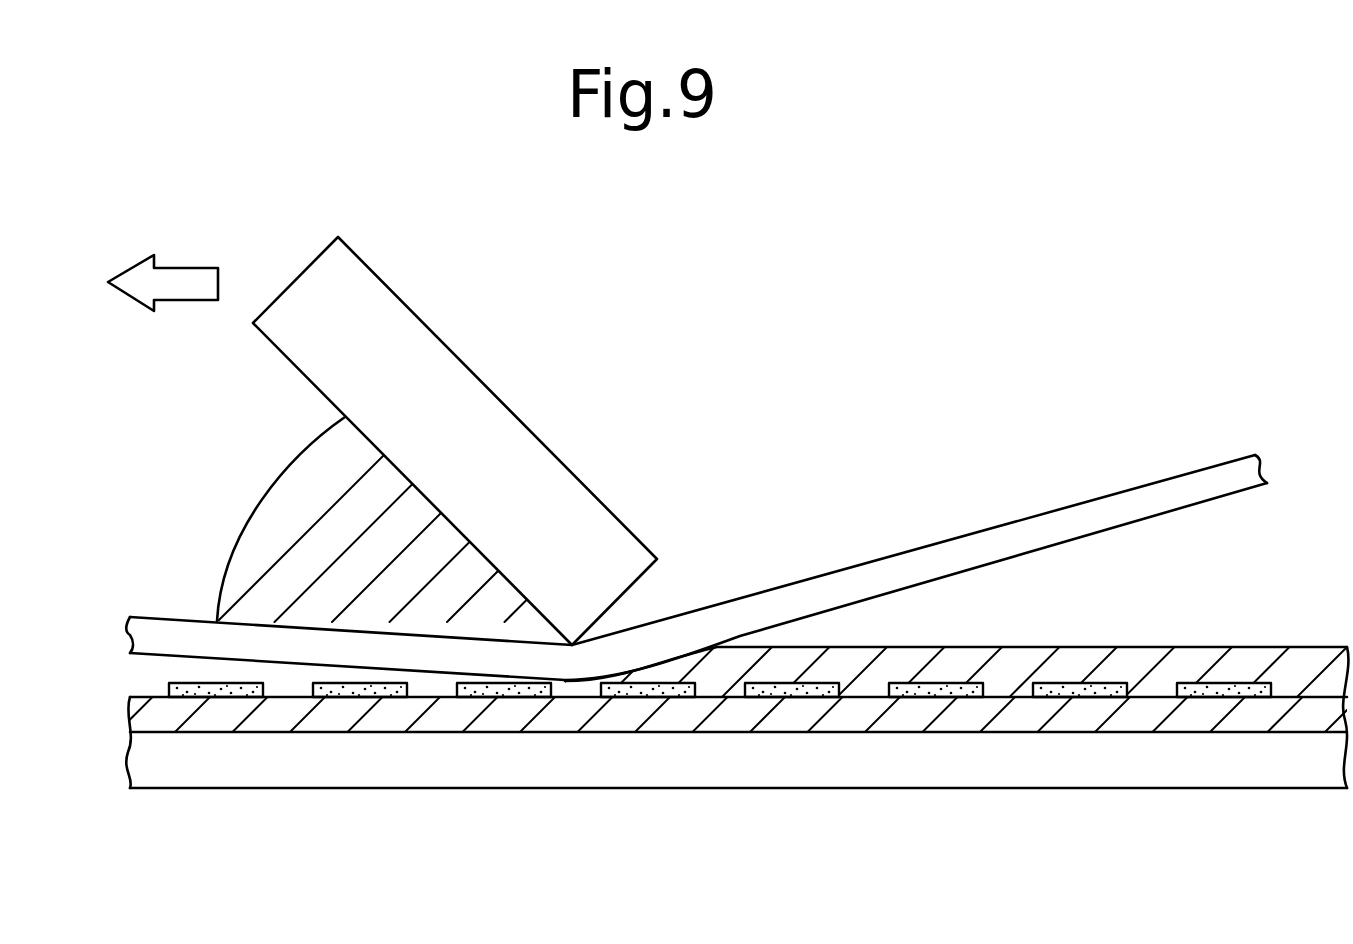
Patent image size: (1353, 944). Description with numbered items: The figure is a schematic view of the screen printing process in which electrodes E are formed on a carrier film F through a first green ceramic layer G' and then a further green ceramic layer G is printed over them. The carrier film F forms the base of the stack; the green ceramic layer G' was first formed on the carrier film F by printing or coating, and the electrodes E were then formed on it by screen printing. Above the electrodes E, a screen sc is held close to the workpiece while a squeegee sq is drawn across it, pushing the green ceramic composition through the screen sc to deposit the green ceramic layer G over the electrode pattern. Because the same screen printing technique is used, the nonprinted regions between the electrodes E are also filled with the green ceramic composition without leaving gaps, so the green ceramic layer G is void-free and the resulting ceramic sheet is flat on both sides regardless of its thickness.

The squeegee sq is at (538, 455).
The screen sc is at (988, 540).
The green ceramic layer G is at (917, 627).
The electrodes E is at (1243, 687).
The green ceramic layer G' is at (731, 786).
The carrier film F is at (1045, 772).